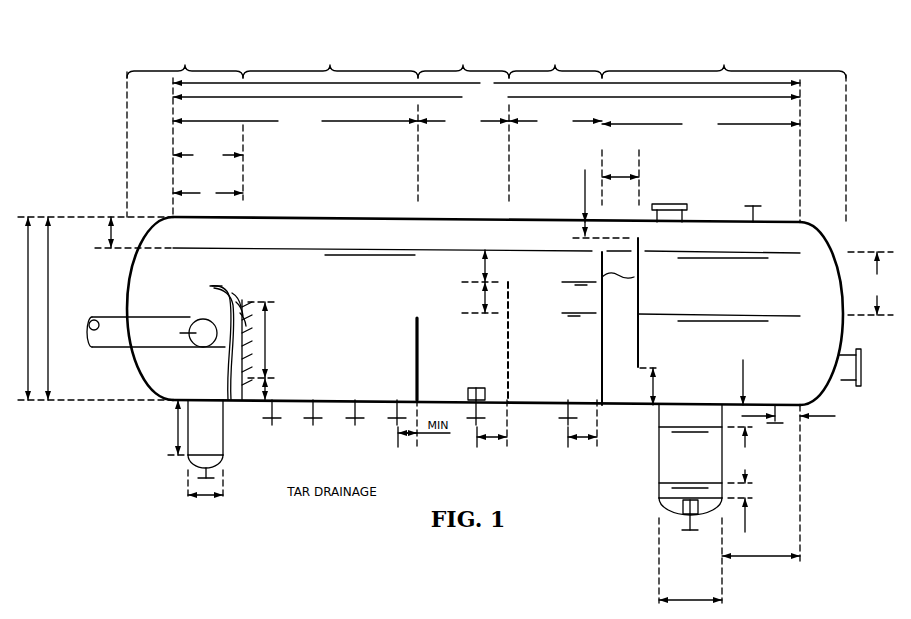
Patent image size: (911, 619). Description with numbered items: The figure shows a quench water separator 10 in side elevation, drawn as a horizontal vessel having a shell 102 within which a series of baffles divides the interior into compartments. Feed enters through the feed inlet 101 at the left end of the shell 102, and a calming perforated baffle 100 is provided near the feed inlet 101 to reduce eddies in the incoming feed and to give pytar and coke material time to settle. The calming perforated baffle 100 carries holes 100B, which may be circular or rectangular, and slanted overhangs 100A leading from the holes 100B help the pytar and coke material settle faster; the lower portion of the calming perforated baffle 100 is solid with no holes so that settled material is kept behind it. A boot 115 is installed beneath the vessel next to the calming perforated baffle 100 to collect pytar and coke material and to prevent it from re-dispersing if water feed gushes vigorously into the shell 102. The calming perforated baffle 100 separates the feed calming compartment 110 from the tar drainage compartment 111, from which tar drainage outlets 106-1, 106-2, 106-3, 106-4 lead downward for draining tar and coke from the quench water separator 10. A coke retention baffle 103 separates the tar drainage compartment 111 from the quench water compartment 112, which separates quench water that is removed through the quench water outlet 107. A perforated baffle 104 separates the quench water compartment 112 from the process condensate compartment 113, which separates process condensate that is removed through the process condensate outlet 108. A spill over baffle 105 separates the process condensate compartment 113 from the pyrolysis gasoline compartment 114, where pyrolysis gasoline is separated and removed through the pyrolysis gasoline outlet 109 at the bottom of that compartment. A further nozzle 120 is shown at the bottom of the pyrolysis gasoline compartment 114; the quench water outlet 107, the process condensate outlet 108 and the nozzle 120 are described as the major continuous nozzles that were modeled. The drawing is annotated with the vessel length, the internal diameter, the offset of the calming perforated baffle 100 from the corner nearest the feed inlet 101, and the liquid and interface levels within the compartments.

The quench water separator 10 is at (67, 115).
The calming perforated baffle 100 is at (227, 349).
The overhang 100A is at (250, 300).
The holes 100B is at (212, 287).
The feed inlet 101 is at (90, 333).
The shell 102 is at (170, 215).
The coke retention baffle 103 is at (414, 342).
The perforated baffle 104 is at (507, 377).
The spill over baffle 105 is at (640, 273).
The tar drainage outlet 106-1 is at (300, 479).
The tar drainage outlet 106-2 is at (322, 479).
The tar drainage outlet 106-3 is at (346, 479).
The tar drainage outlet 106-4 is at (396, 427).
The quench water outlet 107 is at (476, 434).
The process condensate outlet 108 is at (568, 457).
The pyrolysis gasoline outlet 109 is at (729, 504).
The feed calming compartment 110 is at (185, 49).
The tar drainage compartment 111 is at (330, 49).
The quench water compartment 112 is at (460, 49).
The process condensate compartment 113 is at (556, 49).
The pyrolysis gasoline compartment 114 is at (724, 51).
The boot 115 is at (186, 458).
The nozzle 120 is at (775, 428).